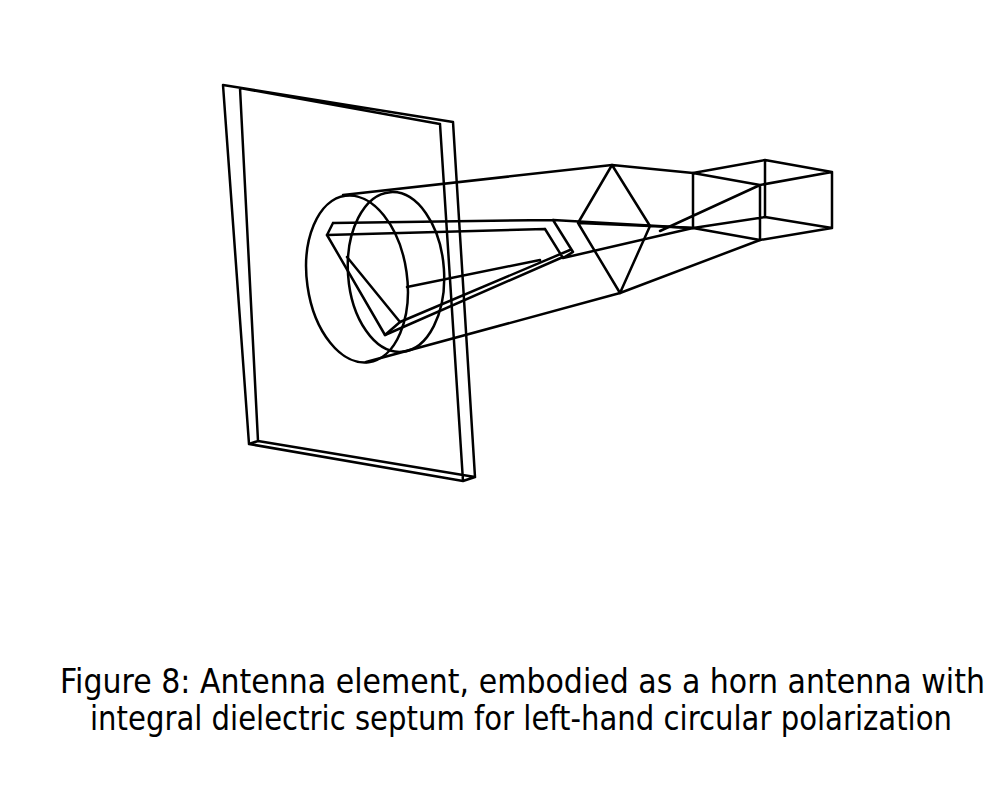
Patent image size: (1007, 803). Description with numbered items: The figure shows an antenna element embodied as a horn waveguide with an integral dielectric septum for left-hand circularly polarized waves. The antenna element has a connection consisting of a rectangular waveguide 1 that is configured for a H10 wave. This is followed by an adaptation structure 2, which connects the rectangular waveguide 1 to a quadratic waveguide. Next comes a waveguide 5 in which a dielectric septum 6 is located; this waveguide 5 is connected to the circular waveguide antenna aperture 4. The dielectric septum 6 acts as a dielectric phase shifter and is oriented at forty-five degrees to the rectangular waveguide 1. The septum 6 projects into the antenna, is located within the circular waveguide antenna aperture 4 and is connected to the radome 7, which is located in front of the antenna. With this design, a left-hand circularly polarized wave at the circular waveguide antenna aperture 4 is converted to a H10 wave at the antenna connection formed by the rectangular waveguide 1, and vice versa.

The rectangular waveguide 1 is at (838, 248).
The adaptation structure 2 is at (763, 268).
The circular waveguide antenna aperture 4 is at (307, 277).
The waveguide in which a dielectric septum is located 5 is at (565, 313).
The dielectric septum 6 is at (480, 265).
The radome 7 is at (297, 155).